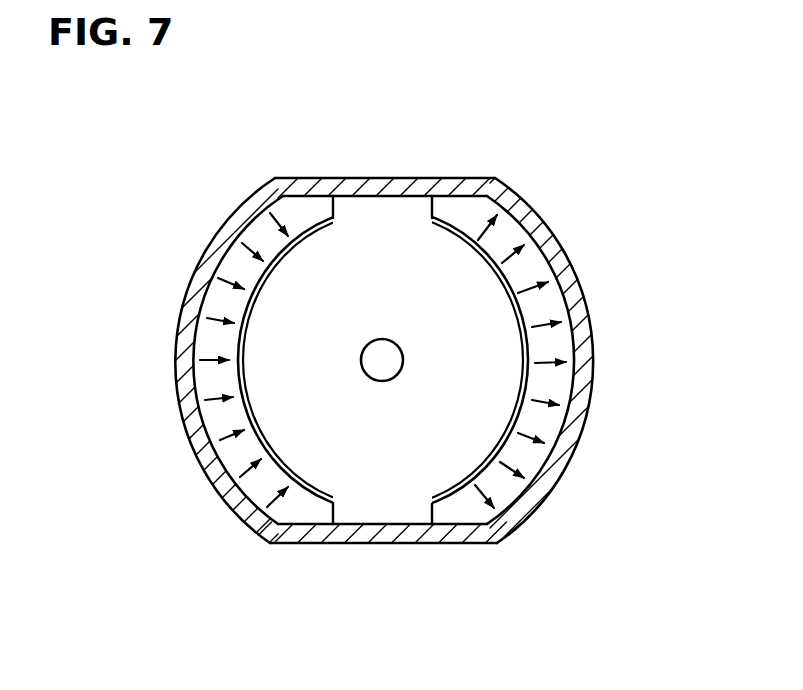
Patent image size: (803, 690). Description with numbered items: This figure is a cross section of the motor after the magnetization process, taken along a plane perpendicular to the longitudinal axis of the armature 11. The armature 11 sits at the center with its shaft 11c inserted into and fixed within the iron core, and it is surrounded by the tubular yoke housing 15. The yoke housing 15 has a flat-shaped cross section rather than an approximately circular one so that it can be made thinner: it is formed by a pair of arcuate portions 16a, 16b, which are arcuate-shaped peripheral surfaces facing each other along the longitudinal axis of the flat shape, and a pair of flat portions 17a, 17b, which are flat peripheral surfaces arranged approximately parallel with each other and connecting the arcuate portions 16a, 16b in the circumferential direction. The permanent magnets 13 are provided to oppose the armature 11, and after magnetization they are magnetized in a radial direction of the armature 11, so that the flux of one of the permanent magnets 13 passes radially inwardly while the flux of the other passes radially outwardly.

The armature 11 is at (367, 228).
The shaft 11c is at (386, 372).
The permanent magnets 13 is at (230, 268).
The yoke housing 15 is at (372, 177).
The arcuate portion 16a is at (178, 323).
The arcuate portion 16b is at (590, 335).
The flat portion 17a is at (338, 545).
The flat portion 17b is at (423, 177).